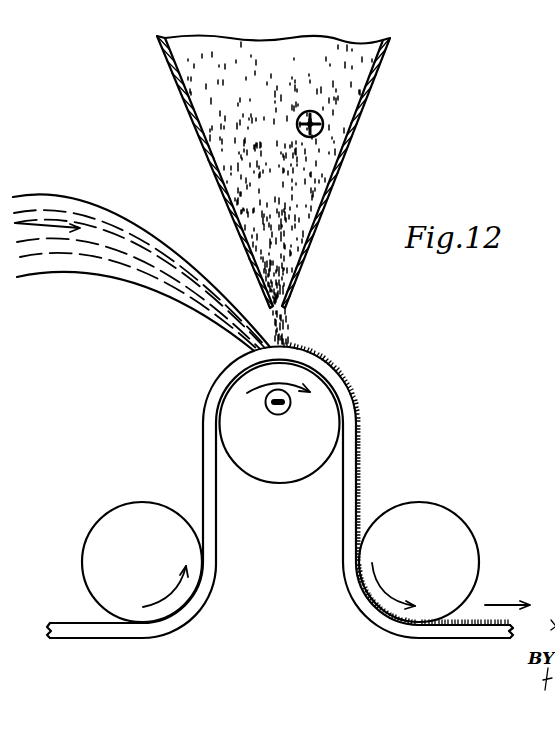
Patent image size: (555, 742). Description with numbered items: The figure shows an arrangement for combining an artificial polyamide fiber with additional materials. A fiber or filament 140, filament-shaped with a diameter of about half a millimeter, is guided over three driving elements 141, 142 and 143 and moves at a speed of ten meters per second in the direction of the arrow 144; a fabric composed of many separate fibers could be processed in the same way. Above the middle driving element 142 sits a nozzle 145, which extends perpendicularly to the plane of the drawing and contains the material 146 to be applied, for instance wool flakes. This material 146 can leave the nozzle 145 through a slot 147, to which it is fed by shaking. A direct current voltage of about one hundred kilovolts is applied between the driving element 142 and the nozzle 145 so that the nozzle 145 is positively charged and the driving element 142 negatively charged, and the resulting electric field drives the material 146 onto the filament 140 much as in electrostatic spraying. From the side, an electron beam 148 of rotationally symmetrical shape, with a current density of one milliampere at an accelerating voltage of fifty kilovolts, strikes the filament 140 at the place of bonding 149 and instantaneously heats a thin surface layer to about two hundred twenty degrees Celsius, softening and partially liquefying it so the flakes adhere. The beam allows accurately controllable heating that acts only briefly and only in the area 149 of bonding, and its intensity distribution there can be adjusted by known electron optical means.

The fiber or filament 140 is at (196, 613).
The driving element 141 is at (455, 537).
The driving element 142 is at (290, 472).
The driving element 143 is at (120, 515).
The arrow 144 is at (490, 605).
The nozzle 145 is at (197, 127).
The material 146 is at (355, 107).
The slot 147 is at (293, 312).
The electron beam 148 is at (128, 284).
The place of bonding 149 is at (257, 351).